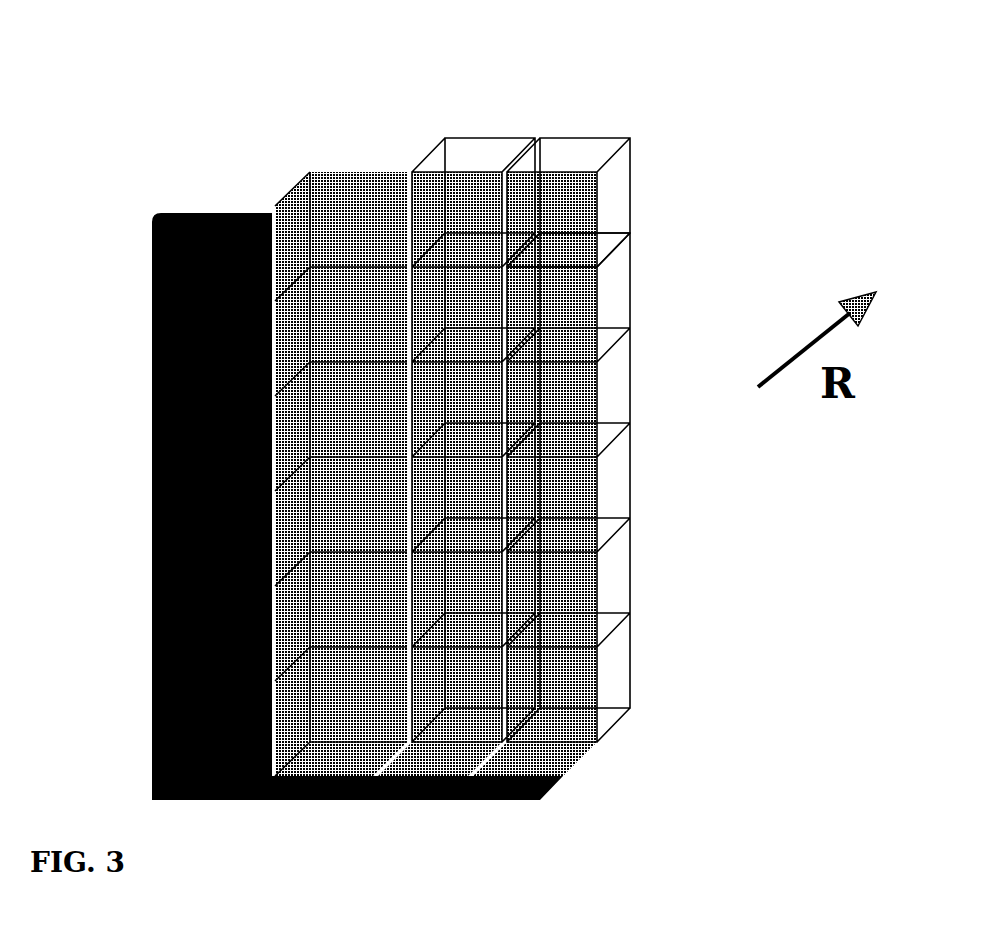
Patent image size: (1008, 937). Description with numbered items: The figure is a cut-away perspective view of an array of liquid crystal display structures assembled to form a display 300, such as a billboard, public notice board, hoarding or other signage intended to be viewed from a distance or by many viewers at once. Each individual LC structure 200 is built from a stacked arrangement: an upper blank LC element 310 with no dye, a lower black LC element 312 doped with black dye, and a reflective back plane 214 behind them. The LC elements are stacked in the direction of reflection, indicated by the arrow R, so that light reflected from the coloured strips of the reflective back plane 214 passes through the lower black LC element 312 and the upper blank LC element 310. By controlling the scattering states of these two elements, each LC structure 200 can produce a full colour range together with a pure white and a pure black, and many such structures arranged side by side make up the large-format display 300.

The display 300 is at (333, 72).
The lower black LC element 312 is at (345, 210).
The LC structure 200 is at (582, 125).
The upper blank LC element 310 is at (618, 202).
The reflective back plane 214 is at (165, 213).